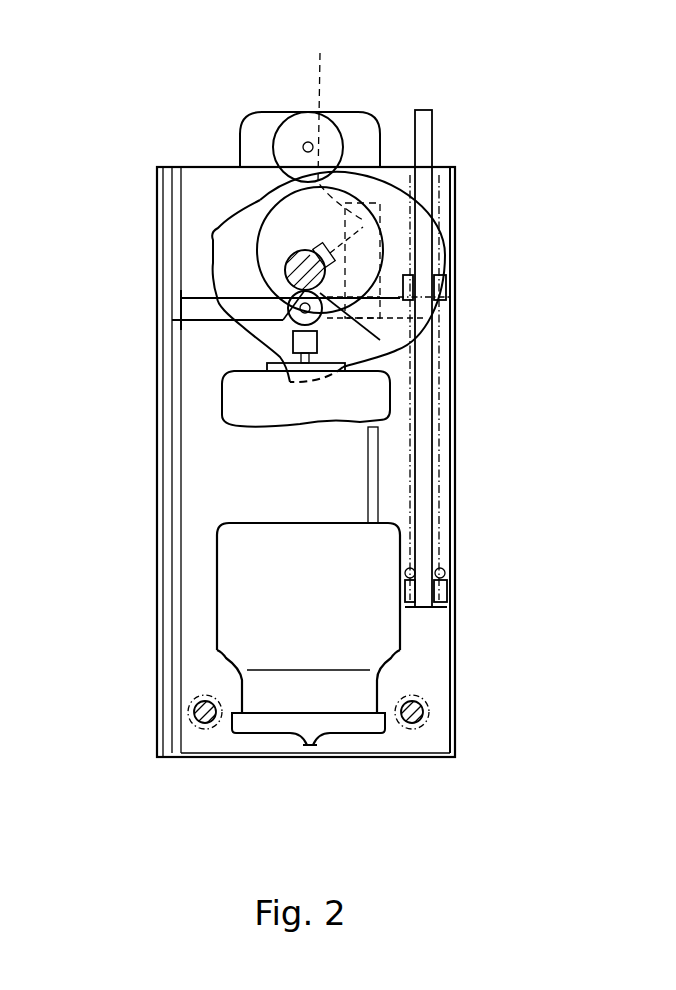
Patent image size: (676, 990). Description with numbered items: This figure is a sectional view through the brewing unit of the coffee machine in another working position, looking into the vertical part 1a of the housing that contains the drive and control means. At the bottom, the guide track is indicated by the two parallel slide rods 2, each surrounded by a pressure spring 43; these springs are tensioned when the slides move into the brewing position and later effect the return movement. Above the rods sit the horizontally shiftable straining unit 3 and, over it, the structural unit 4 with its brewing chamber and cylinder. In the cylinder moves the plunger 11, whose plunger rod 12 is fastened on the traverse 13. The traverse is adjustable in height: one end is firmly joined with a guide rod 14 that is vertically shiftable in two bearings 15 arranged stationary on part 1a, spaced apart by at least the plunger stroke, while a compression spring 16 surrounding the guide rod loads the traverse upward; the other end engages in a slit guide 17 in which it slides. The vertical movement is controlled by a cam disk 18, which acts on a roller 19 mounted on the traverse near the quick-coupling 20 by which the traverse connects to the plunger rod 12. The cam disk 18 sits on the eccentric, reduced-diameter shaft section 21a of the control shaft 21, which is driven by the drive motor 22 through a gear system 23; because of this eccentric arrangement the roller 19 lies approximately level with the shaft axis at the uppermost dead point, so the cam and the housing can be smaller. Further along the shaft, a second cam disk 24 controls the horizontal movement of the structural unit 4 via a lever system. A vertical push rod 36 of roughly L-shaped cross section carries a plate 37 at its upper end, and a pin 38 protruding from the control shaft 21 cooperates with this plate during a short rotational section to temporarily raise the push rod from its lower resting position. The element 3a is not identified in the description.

The vertical part of the housing 1a is at (455, 382).
The slide rods 2 is at (196, 711).
The straining unit 3 is at (308, 726).
The centering lug 3a is at (312, 748).
The structural unit 4 is at (217, 588).
The plunger 11 is at (240, 418).
The plunger rod 12 is at (300, 352).
The traverse 13 is at (202, 307).
The guide rod 14 is at (422, 497).
The bearings 15 is at (445, 285).
The compression spring 16 is at (440, 402).
The slit guide 17 is at (175, 333).
The cam disk 18 is at (387, 196).
The roller 19 is at (303, 308).
The quick-coupling 20 is at (303, 342).
The control shaft 21 is at (263, 277).
The shaft section 21a is at (290, 249).
The drive motor 22 is at (330, 138).
The gear system 23 is at (271, 125).
The cam disk 24 is at (238, 227).
The push rod 36 is at (372, 453).
The plate 37 is at (357, 207).
The pin 38 is at (336, 124).
The pressure springs 43 is at (192, 700).